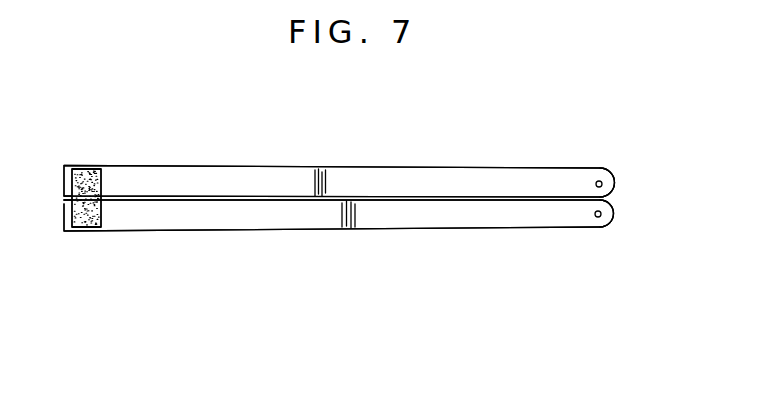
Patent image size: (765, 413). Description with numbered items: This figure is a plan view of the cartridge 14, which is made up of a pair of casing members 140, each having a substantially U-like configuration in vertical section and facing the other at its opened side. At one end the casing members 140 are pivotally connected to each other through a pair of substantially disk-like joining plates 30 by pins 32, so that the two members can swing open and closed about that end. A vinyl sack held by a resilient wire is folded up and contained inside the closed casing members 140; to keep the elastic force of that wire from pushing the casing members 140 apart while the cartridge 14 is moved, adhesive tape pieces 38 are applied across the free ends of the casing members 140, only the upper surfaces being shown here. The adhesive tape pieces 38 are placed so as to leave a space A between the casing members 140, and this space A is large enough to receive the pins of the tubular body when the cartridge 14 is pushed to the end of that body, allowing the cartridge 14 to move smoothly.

The cartridge 14 is at (355, 163).
The casing members 140 is at (415, 175).
The adhesive tape pieces 38 is at (86, 176).
The space A is at (70, 199).
The pins 32 is at (597, 180).
The joining plates 30 is at (615, 199).